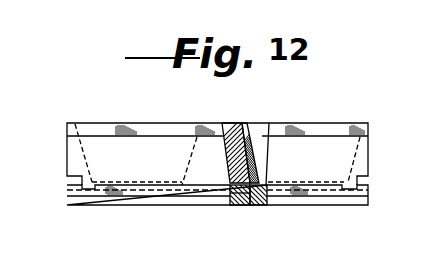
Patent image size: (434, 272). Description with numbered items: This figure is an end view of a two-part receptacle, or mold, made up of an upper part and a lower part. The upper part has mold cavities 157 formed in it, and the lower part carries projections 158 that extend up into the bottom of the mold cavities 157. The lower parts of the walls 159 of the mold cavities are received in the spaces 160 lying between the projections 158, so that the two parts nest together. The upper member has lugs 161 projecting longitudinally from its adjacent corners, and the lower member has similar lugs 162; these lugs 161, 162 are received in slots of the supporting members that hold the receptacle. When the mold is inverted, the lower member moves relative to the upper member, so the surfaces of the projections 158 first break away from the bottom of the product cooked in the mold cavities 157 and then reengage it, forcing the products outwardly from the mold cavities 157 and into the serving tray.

The mold cavities 157 is at (258, 143).
The projections 158 is at (117, 177).
The walls of the mold cavities 159 is at (240, 198).
The spaces 160 is at (257, 198).
The lugs 161 is at (333, 135).
The lugs 162 is at (67, 190).